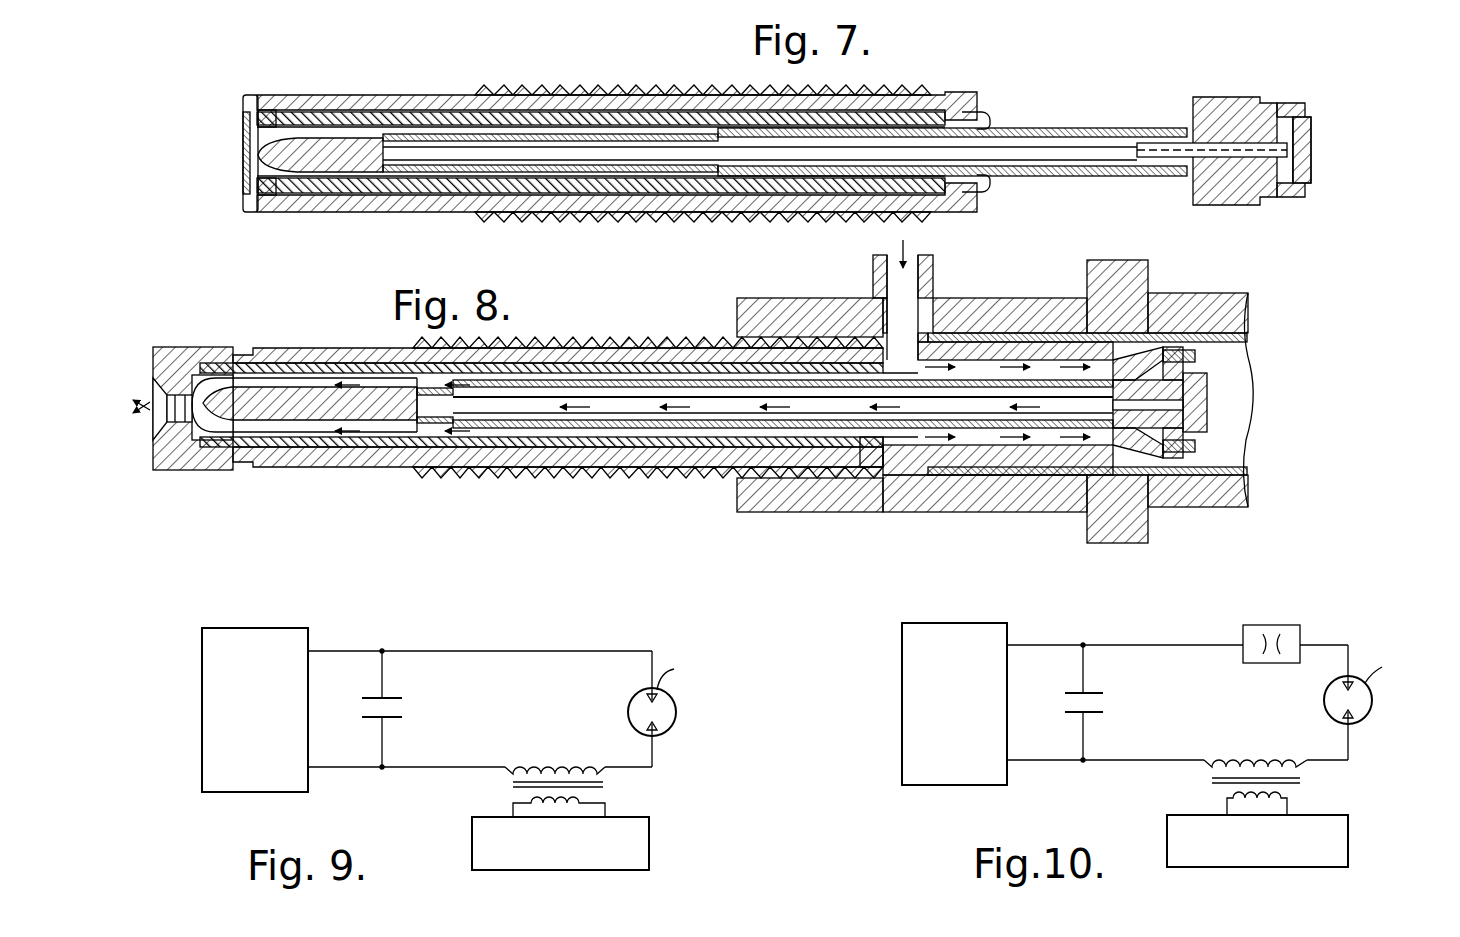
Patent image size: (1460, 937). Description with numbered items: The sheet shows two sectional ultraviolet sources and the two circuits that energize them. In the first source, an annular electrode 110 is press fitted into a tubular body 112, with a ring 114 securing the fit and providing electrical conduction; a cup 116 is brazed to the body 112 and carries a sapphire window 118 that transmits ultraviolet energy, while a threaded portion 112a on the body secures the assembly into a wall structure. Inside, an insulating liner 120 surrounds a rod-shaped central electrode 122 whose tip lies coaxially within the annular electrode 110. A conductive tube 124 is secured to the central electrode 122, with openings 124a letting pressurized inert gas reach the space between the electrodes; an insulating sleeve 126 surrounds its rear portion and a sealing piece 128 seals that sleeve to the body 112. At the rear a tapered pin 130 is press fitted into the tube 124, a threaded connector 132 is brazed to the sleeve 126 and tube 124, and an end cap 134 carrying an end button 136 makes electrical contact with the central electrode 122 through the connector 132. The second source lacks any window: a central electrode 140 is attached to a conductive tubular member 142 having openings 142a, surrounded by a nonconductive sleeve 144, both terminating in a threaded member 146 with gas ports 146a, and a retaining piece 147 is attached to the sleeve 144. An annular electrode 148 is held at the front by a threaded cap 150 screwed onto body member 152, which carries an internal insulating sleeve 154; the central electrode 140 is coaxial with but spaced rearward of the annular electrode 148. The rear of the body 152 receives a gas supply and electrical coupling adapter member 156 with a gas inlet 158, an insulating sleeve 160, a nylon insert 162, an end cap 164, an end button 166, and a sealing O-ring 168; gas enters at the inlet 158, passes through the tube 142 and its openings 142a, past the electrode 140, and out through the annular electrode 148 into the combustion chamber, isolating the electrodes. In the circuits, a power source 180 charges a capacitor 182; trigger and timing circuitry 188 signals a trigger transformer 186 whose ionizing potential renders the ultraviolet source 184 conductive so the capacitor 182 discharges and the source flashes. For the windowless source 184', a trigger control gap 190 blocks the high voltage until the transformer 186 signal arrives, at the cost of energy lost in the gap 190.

In FIG. 7, the annular electrode 110 is at (264, 108).
In FIG. 7, the tubular body 112 is at (330, 95).
In FIG. 7, the threaded portion 112a is at (496, 90).
In FIG. 7, the ring 114 is at (258, 196).
In FIG. 7, the cup 116 is at (243, 98).
In FIG. 7, the window 118 is at (243, 155).
In FIG. 7, the insulating liner 120 is at (435, 113).
In FIG. 7, the central electrode 122 is at (310, 165).
In FIG. 7, the conductive tube 124 is at (645, 134).
In FIG. 7, the openings 124a is at (415, 175).
In FIG. 7, the insulating sleeve 126 is at (1045, 128).
In FIG. 7, the sealing piece 128 is at (988, 108).
In FIG. 7, the tapered pin 130 is at (1152, 145).
In FIG. 7, the threaded connector 132 is at (1218, 125).
In FIG. 7, the end cap 134 is at (1283, 115).
In FIG. 7, the end button 136 is at (1311, 130).
In FIG. 8, the central electrode 140 is at (360, 418).
In FIG. 8, the tubular member 142 is at (530, 430).
In FIG. 8, the openings 142a is at (470, 428).
In FIG. 8, the nonconductive sleeve 144 is at (690, 442).
In FIG. 8, the threaded member 146 is at (1180, 452).
In FIG. 8, the gas ports 146a is at (1097, 373).
In FIG. 8, the retaining piece 147 is at (883, 465).
In FIG. 8, the annular electrode 148 is at (183, 430).
In FIG. 8, the threaded cap 150 is at (163, 350).
In FIG. 8, the body member 152 is at (268, 350).
In FIG. 8, the insulating sleeve 154 is at (318, 365).
In FIG. 8, the gas supply and electrical coupling adapter member 156 is at (765, 300).
In FIG. 8, the gas inlet 158 is at (932, 268).
In FIG. 8, the insulating sleeve 160 is at (1210, 335).
In FIG. 8, the insert 162 is at (1030, 333).
In FIG. 8, the end cap 164 is at (1197, 447).
In FIG. 8, the end button 166 is at (1209, 405).
In FIG. 8, the O-ring 168 is at (1133, 348).
In FIG. 9, the power source 180 is at (250, 634).
In FIG. 10, the power source 180 is at (943, 633).
In FIG. 9, the capacitor 182 is at (403, 709).
In FIG. 10, the capacitor 182 is at (1105, 705).
In FIG. 9, the ultraviolet source 184 is at (702, 709).
In FIG. 10, the ignition source 184' is at (1390, 697).
In FIG. 9, the trigger transformer 186 is at (612, 787).
In FIG. 10, the trigger transformer 186 is at (1302, 781).
In FIG. 9, the trigger and timing circuitry 188 is at (650, 844).
In FIG. 10, the trigger and timing circuitry 188 is at (1348, 838).
In FIG. 10, the trigger control gap 190 is at (1260, 625).